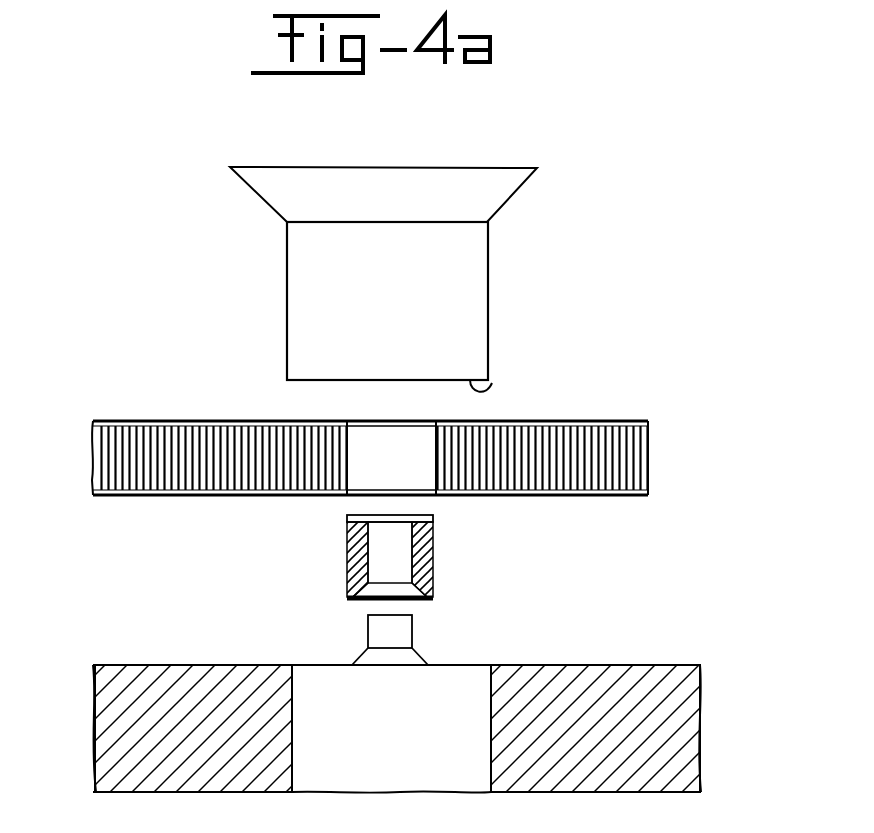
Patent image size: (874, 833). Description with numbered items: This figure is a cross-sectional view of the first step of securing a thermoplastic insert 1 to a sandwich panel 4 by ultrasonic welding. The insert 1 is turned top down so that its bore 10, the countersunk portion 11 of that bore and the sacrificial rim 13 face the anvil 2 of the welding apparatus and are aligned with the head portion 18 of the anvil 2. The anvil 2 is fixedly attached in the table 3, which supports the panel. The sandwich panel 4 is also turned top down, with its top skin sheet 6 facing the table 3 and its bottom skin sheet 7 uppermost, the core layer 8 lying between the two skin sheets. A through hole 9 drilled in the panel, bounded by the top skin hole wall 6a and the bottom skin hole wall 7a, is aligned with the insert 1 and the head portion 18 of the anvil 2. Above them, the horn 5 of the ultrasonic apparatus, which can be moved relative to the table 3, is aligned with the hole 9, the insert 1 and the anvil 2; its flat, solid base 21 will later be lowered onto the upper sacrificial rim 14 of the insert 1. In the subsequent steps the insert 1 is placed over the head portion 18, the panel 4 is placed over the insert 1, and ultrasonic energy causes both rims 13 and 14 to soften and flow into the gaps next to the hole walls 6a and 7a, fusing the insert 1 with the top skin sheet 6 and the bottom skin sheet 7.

The insert 1 is at (336, 562).
The anvil 2 is at (460, 656).
The table 3 is at (607, 683).
The sandwich panel 4 is at (160, 414).
The horn 5 is at (463, 288).
The top skin sheet 6 is at (622, 497).
The top skin hole wall 6a is at (435, 490).
The bottom skin sheet 7 is at (615, 420).
The bottom skin hole wall 7a is at (424, 420).
The core layer 8 is at (627, 460).
The hole 9 is at (407, 480).
The bore 10 is at (393, 565).
The countersunk portion 11 is at (419, 596).
The sacrificial rim 13 is at (347, 598).
The sacrificial rim 14 is at (347, 522).
The head portion 18 is at (373, 640).
The flat, solid base 21 is at (492, 383).